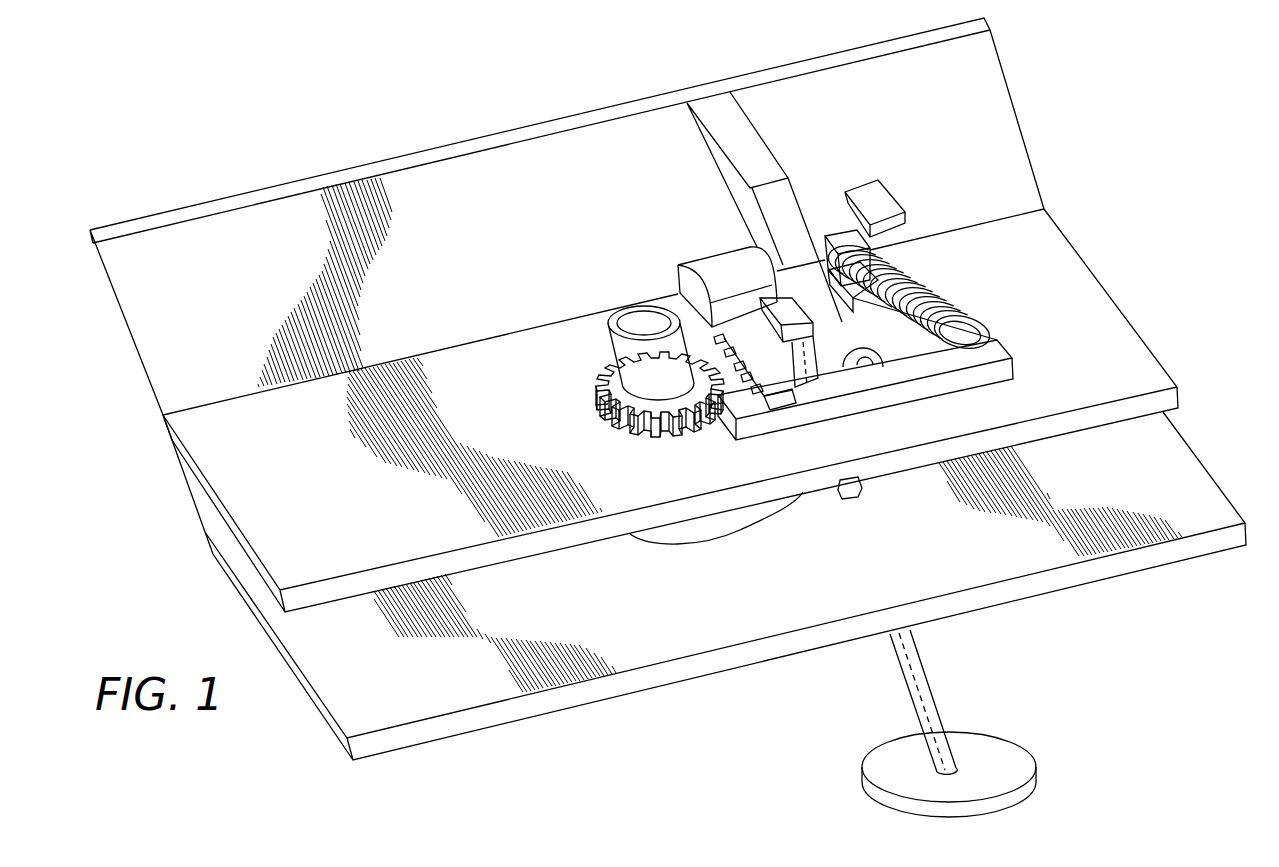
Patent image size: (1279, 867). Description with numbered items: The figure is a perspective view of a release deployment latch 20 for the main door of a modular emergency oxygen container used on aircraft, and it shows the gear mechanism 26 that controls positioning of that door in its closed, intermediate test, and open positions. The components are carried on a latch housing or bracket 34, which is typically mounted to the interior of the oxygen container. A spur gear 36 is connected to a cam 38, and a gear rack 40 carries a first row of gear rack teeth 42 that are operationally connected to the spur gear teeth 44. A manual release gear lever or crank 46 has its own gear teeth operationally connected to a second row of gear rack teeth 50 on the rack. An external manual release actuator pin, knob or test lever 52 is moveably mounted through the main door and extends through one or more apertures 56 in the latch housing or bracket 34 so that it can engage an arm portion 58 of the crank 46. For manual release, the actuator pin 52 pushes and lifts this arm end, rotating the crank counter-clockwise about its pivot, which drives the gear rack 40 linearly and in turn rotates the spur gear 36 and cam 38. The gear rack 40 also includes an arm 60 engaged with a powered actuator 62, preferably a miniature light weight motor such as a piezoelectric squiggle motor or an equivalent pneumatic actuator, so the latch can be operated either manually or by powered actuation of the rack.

The release deployment latch 20 is at (1105, 227).
The gear mechanism 26 is at (624, 284).
The latch housing or bracket 34 is at (1083, 323).
The spur gear 36 is at (630, 370).
The cam 38 is at (718, 528).
The gear rack 40 is at (772, 394).
The first row of gear rack teeth 42 is at (743, 413).
The spur gear teeth 44 is at (613, 422).
The manual release gear lever or crank 46 is at (722, 264).
The second row of gear rack teeth 50 is at (757, 398).
The external manual release actuator pin, knob or test lever 52 is at (817, 370).
The apertures 56 is at (851, 500).
The arm portion 58 is at (782, 306).
The arm 60 is at (990, 367).
The powered actuator 62 is at (850, 333).